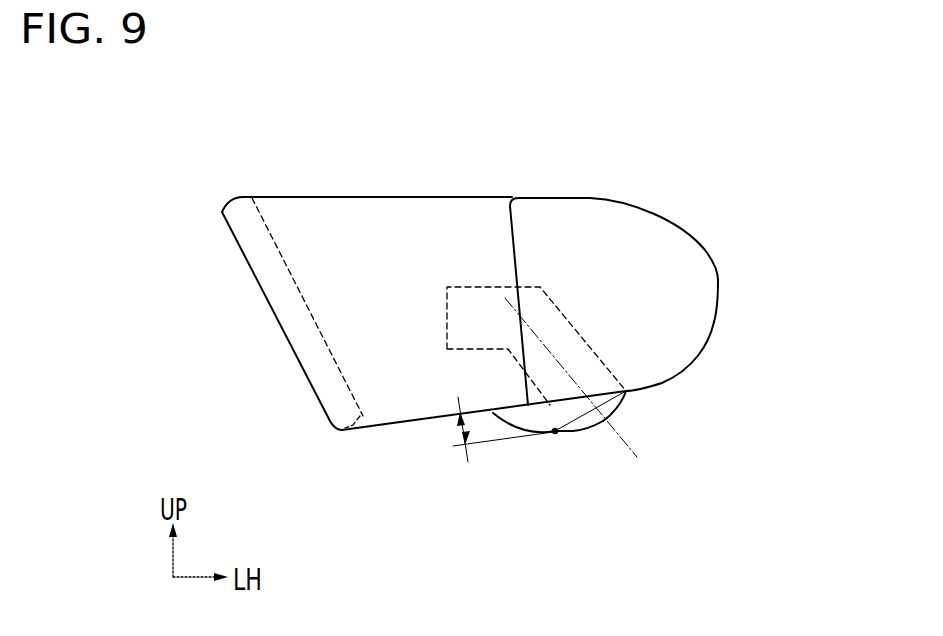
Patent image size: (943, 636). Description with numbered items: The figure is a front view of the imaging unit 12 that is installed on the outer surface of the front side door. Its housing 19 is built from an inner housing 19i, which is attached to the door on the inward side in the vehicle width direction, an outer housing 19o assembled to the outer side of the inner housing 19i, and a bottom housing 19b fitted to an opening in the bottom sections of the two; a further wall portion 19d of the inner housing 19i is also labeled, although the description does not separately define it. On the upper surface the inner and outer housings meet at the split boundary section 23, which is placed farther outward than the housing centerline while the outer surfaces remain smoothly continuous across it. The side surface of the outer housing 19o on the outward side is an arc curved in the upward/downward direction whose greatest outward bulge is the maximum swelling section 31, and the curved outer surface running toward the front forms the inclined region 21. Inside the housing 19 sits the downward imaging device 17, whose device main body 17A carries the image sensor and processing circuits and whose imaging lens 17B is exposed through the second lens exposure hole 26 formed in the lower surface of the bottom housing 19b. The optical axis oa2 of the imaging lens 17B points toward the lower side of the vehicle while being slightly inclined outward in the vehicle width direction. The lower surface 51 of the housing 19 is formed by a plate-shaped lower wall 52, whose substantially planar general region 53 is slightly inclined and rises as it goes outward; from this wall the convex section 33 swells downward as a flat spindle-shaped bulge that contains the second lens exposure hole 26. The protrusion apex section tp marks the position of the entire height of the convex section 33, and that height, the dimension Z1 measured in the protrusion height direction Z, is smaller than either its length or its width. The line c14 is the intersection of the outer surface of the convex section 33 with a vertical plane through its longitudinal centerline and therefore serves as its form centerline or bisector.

The imaging unit 12 is at (663, 213).
The housing 19 is at (455, 357).
The inner housing 19i is at (390, 208).
The outer housing 19o is at (583, 208).
The lens side wall 19d is at (300, 335).
The bottom housing 19b is at (491, 420).
The split boundary section 23 is at (511, 259).
The maximum swelling section 31 is at (718, 278).
The inclined region 21 is at (643, 307).
The downward imaging device 17 is at (597, 428).
The device main body 17A is at (460, 350).
The imaging lens 17B is at (618, 413).
The second lens exposure hole 26 is at (585, 429).
The protrusion apex section tp is at (553, 434).
The convex section 33 is at (530, 432).
The optical axis oa2 is at (612, 427).
The line of intersection c14 is at (550, 417).
The protrusion height direction Z is at (475, 468).
The entire height dimension Z1 is at (462, 437).
The lower surface 51 is at (326, 477).
The lower wall 52 is at (368, 430).
The general region 53 is at (390, 430).